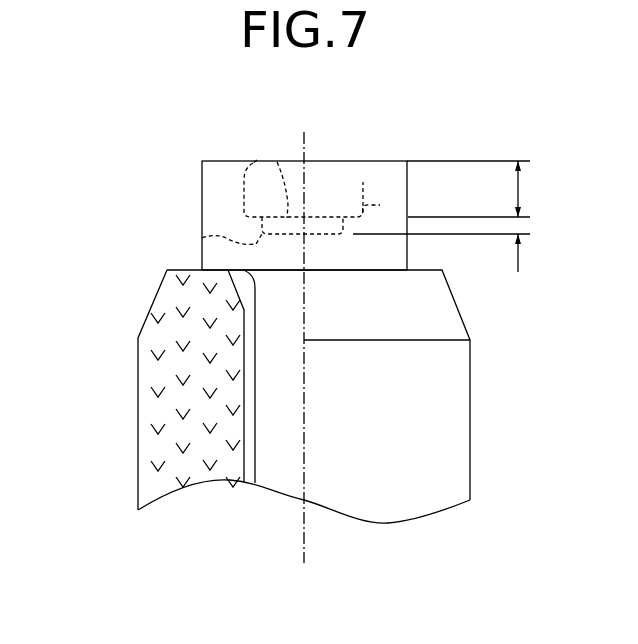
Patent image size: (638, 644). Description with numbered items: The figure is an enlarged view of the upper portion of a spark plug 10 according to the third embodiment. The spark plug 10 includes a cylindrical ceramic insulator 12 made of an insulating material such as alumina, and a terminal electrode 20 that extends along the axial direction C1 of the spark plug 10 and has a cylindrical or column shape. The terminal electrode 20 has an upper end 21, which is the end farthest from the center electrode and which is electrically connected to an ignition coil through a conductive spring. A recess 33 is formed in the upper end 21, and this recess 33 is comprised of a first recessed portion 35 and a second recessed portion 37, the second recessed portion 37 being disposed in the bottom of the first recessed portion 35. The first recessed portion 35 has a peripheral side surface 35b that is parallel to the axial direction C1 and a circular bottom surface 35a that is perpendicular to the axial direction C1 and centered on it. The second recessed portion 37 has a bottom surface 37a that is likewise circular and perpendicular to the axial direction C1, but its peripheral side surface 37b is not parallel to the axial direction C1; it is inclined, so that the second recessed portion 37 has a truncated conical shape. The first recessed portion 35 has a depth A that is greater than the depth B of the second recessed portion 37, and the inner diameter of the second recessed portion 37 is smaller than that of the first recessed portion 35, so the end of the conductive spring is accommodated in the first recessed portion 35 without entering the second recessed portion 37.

The spark plug 10 is at (467, 145).
The ceramic insulator 12 is at (138, 386).
The terminal electrode 20 is at (283, 360).
The upper end 21 is at (202, 185).
The recess 33 is at (325, 177).
The first recessed portion 35 is at (363, 182).
The bottom surface 35a is at (380, 205).
The peripheral side surface 35b is at (257, 160).
The second recessed portion 37 is at (343, 229).
The bottom surface 37a is at (277, 162).
The peripheral side surface 37b is at (202, 238).
The axial direction C1 is at (304, 151).
The depth A is at (474, 189).
The depth B is at (446, 255).